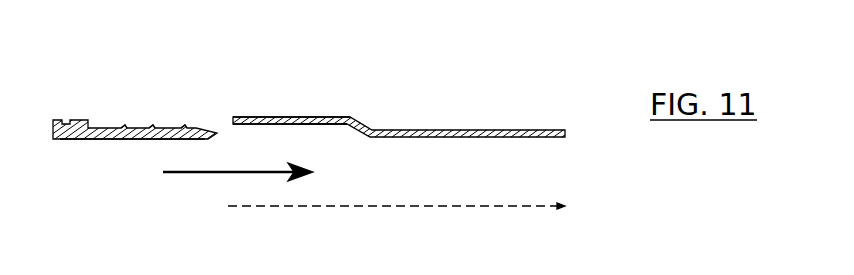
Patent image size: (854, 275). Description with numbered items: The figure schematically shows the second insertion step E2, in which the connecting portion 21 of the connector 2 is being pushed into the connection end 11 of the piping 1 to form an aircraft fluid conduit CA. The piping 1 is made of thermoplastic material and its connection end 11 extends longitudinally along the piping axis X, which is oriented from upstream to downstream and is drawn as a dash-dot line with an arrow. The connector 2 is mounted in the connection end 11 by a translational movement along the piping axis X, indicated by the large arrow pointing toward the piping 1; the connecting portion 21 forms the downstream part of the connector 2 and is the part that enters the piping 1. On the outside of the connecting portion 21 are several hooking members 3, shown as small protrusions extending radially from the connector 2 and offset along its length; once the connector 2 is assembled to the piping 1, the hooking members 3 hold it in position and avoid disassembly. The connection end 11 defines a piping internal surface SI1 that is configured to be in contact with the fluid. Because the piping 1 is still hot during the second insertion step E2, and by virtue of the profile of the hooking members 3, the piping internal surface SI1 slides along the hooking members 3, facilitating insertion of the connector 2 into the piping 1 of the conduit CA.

The piping 1 is at (492, 128).
The connection end 11 is at (307, 117).
The connector 2 is at (118, 114).
The hooking members 3 is at (185, 121).
The connecting portion 21 is at (143, 154).
The second insertion step E2 is at (104, 237).
The aircraft fluid conduit CA is at (203, 58).
The piping internal surface SI1 is at (338, 134).
The piping axis X is at (408, 207).